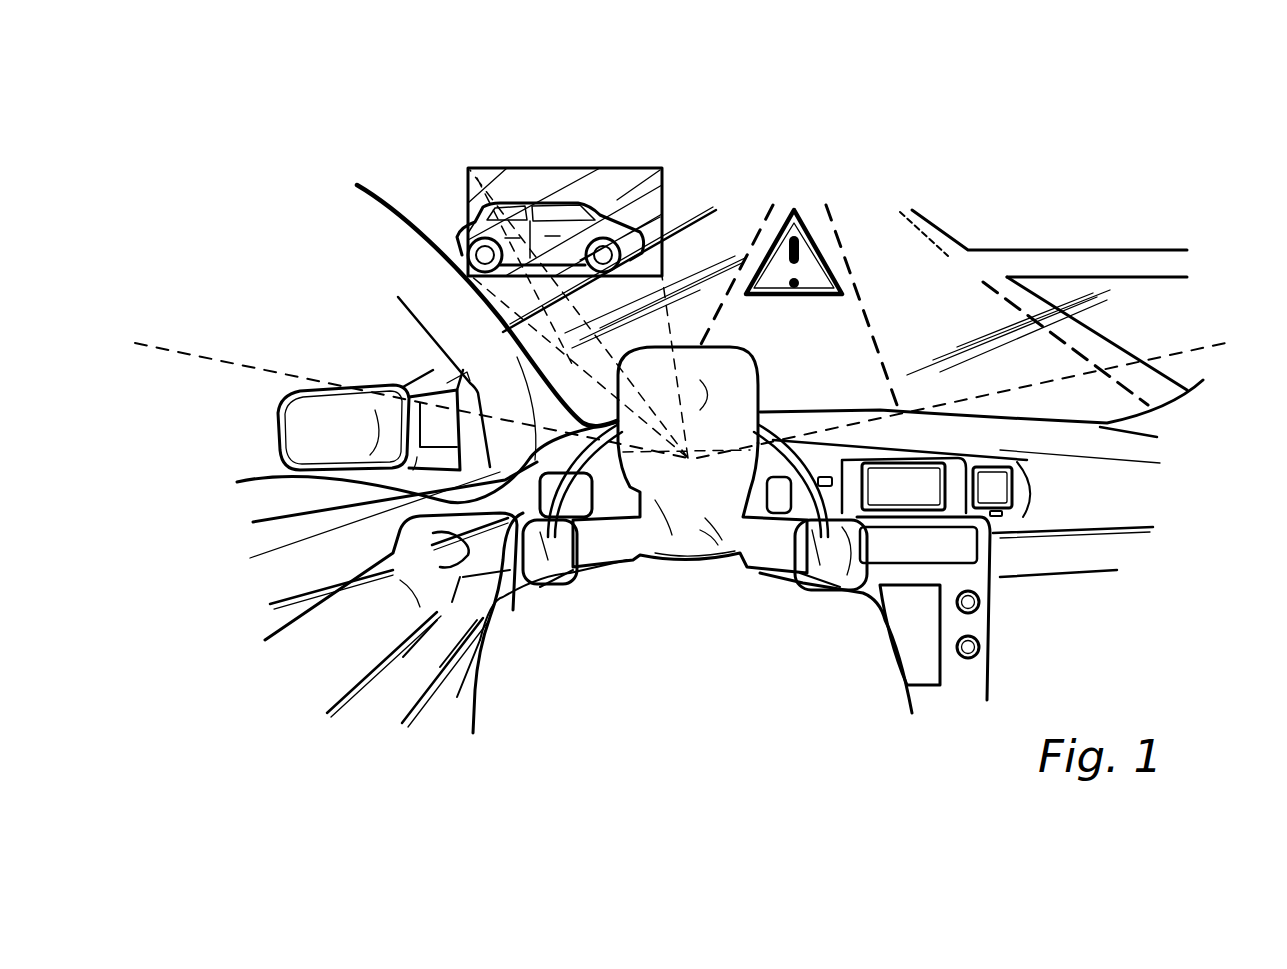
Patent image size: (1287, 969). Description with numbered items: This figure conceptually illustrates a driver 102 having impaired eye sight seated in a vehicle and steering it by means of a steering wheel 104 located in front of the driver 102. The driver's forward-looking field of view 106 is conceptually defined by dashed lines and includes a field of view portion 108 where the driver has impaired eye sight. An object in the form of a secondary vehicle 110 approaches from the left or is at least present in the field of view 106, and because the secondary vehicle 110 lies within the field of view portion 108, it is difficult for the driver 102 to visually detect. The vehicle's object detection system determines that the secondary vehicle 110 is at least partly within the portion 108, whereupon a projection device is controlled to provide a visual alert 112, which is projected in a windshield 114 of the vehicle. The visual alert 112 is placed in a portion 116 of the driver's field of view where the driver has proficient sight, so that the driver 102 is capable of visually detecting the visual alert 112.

The driver 102 is at (548, 629).
The steering wheel 104 is at (265, 475).
The field of view 106 is at (230, 362).
The field of view portion 108 is at (480, 163).
The secondary vehicle 110 is at (543, 203).
The visual alert 112 is at (823, 243).
The windshield 114 is at (980, 360).
The portion 116 is at (797, 152).